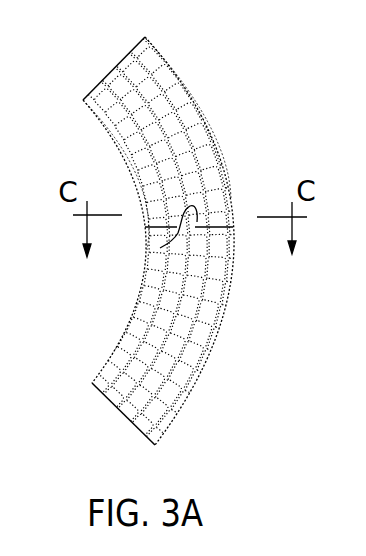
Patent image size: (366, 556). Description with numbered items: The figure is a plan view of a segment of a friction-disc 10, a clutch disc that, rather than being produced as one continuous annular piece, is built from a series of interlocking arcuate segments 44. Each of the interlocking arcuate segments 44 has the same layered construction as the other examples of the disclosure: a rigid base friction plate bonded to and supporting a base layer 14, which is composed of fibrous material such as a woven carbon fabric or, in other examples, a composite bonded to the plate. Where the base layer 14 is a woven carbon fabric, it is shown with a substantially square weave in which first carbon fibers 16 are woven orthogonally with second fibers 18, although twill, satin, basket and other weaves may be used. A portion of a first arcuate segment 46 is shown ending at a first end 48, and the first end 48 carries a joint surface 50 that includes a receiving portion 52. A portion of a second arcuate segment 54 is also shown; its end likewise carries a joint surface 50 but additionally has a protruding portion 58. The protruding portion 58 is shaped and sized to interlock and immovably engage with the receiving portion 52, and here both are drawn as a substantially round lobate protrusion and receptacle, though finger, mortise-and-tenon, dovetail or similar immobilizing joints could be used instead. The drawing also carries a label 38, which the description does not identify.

The friction-disc 10 is at (243, 59).
The base layer 14 is at (186, 71).
The first carbon fibers 16 is at (203, 310).
The second fibers 18 is at (124, 341).
The outer edge 38 is at (208, 108).
The interlocking arcuate segments 44 is at (265, 109).
The first arcuate segment 46 is at (104, 73).
The first end 48 is at (142, 202).
The joint surface 50 is at (200, 210).
The receiving portion 52 is at (197, 221).
The second arcuate segment 54 is at (96, 404).
The protruding portion 58 is at (160, 248).